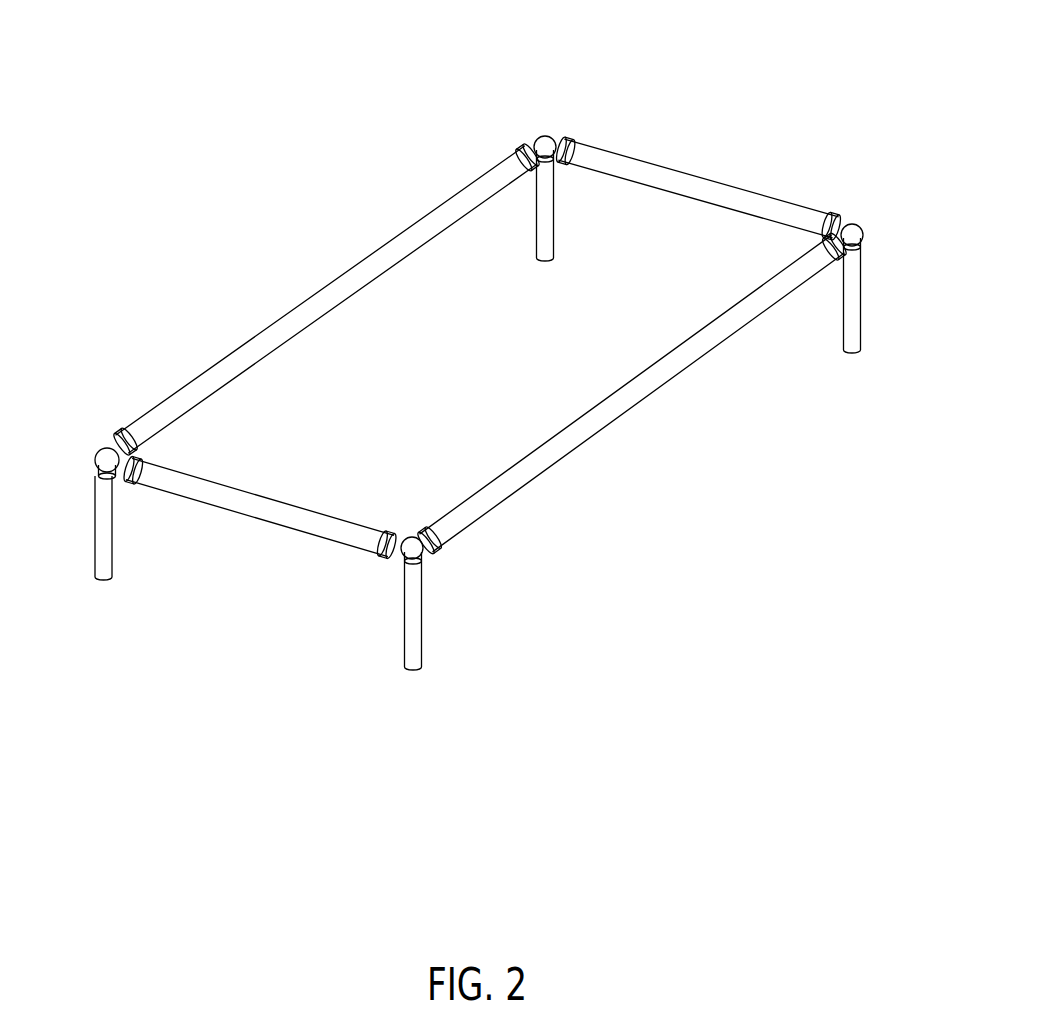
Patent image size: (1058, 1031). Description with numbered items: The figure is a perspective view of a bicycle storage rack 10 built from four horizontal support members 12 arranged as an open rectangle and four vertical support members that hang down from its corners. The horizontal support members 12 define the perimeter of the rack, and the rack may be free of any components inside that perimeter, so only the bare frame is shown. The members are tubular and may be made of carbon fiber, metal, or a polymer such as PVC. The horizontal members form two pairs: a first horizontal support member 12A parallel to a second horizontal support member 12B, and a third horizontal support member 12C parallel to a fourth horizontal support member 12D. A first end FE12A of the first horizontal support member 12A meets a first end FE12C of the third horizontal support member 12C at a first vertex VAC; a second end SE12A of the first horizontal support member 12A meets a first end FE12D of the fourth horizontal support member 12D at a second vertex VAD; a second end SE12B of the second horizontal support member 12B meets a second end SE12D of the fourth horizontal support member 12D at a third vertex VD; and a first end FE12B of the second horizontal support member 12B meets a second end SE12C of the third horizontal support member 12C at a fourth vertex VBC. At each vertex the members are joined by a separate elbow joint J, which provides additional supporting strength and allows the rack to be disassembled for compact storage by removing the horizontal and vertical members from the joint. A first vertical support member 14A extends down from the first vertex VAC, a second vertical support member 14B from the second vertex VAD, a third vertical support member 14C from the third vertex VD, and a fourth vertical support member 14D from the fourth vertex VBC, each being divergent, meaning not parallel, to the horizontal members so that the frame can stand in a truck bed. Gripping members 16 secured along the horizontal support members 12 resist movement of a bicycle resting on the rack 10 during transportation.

The bicycle storage rack 10 is at (708, 38).
The horizontal support members 12 is at (672, 150).
The first horizontal support member 12A is at (115, 453).
The second horizontal support member 12B is at (446, 540).
The third horizontal support member 12C is at (834, 223).
The fourth horizontal support member 12D is at (383, 560).
The first vertical support member 14A is at (543, 223).
The second vertical support member 14B is at (103, 542).
The third vertical support member 14C is at (413, 635).
The fourth vertical support member 14D is at (850, 312).
The gripping member 16 is at (697, 183).
The first end of the first horizontal support member FE12A is at (530, 150).
The first end of the second horizontal support member FE12B is at (843, 242).
The first end of the third horizontal support member FE12C is at (568, 140).
The first end of the fourth horizontal support member FE12D is at (125, 476).
The second end of the first horizontal support member SE12A is at (110, 450).
The second end of the second horizontal support member SE12B is at (440, 555).
The second end of the third horizontal support member SE12C is at (832, 220).
The second end of the fourth horizontal support member SE12D is at (390, 540).
The first vertex VAC is at (543, 115).
The fourth vertex VBC is at (868, 215).
The second vertex VAD is at (80, 460).
The third vertex VD is at (396, 567).
The elbow joint J is at (867, 230).